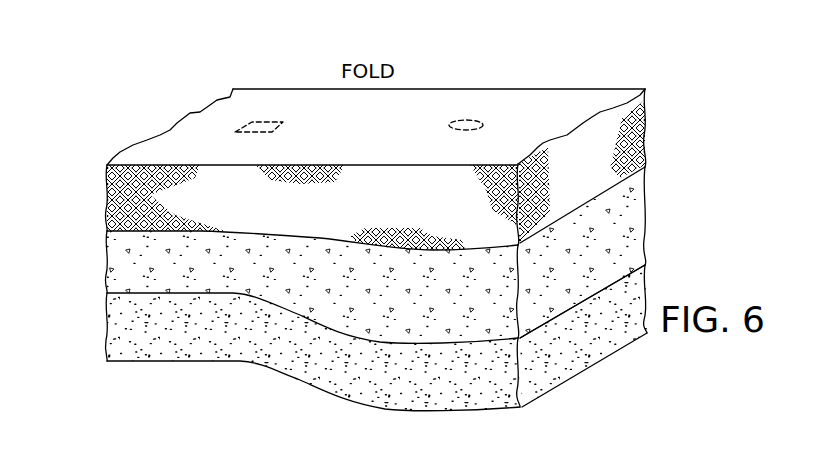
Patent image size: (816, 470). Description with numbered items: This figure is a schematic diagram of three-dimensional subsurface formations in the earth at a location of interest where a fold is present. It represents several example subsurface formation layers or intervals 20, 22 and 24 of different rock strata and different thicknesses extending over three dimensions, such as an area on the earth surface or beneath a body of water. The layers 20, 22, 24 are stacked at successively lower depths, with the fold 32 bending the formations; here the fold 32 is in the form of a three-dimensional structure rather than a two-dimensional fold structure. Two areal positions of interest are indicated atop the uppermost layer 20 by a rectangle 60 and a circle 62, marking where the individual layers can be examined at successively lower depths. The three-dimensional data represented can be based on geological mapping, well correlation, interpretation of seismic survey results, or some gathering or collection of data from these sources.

The subsurface formation layer 20 is at (93, 192).
The subsurface formation layer 22 is at (93, 256).
The subsurface formation layer 24 is at (93, 321).
The fold 32 is at (276, 382).
The rectangle 60 is at (250, 122).
The circle 62 is at (470, 120).